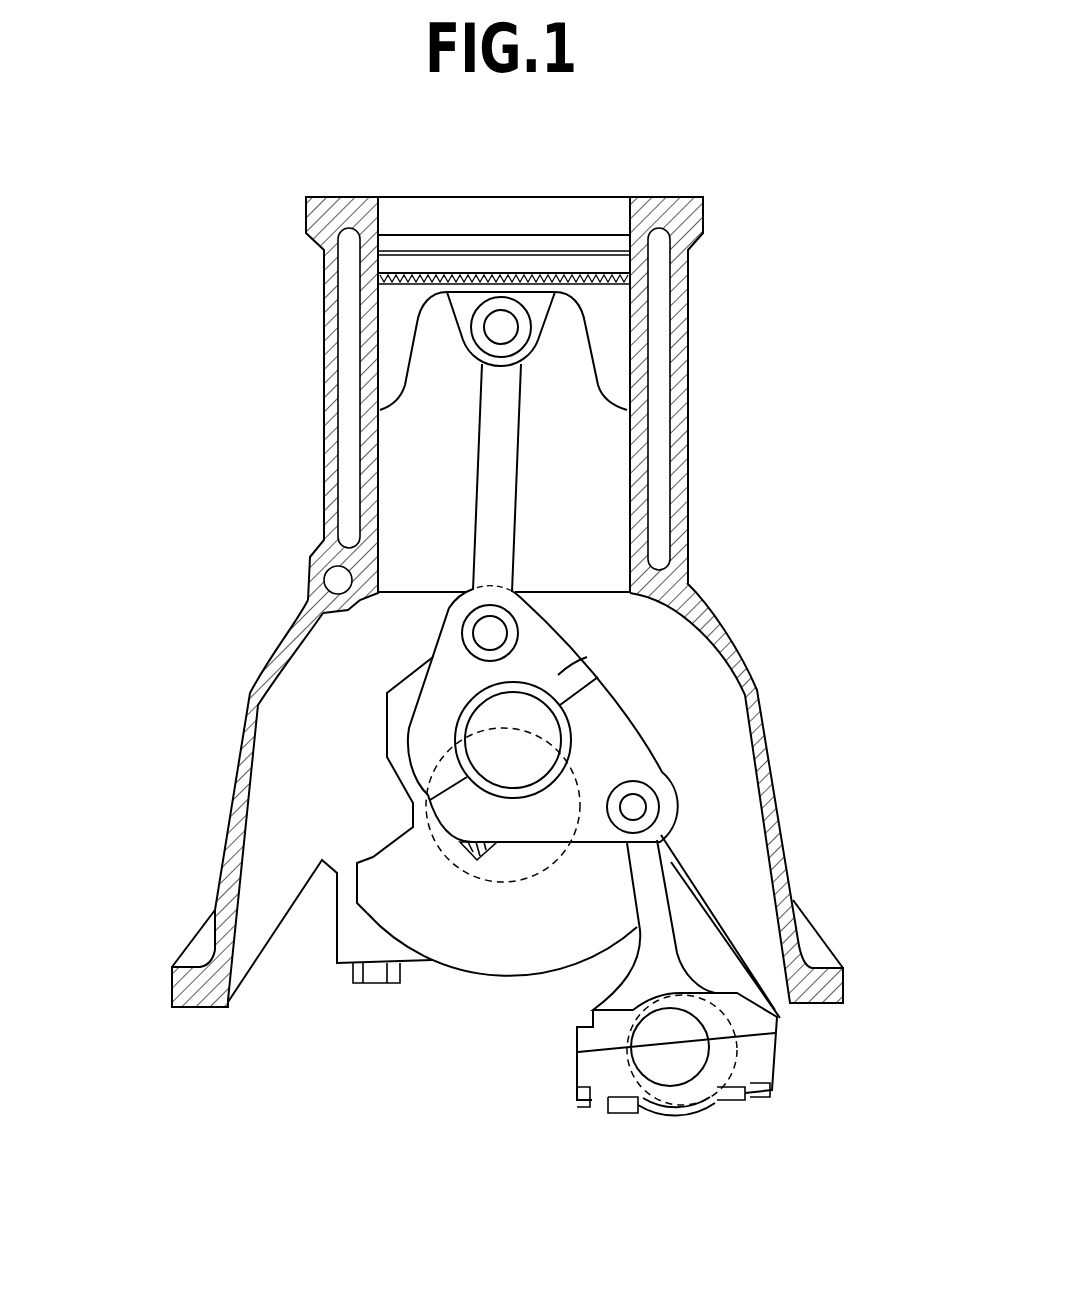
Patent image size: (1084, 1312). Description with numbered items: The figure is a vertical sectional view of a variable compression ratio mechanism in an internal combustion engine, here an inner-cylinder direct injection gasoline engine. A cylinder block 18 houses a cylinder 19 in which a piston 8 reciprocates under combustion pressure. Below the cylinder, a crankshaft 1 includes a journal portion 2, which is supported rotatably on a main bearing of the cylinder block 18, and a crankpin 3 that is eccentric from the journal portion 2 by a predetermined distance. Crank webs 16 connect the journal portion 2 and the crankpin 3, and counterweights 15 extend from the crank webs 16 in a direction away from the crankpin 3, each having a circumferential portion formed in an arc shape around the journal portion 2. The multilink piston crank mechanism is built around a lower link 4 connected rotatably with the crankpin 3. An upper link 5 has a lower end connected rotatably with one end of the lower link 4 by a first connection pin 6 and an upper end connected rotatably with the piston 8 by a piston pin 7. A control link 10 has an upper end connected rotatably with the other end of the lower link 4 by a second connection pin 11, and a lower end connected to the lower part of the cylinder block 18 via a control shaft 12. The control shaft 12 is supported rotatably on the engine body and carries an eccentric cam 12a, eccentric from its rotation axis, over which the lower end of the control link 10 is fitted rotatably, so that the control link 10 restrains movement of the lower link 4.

The crankshaft 1 is at (362, 928).
The journal portion 2 is at (462, 872).
The crankpin 3 is at (548, 727).
The lower link 4 is at (560, 670).
The upper link 5 is at (523, 530).
The first connection pin 6 is at (487, 632).
The piston pin 7 is at (500, 327).
The piston 8 is at (612, 330).
The control link 10 is at (653, 937).
The second connection pin 11 is at (633, 807).
The control shaft 12 is at (753, 1060).
The eccentric cam 12a is at (665, 1053).
The counterweight 15 is at (500, 957).
The crank web 16 is at (393, 725).
The cylinder block 18 is at (798, 864).
The cylinder 19 is at (647, 447).